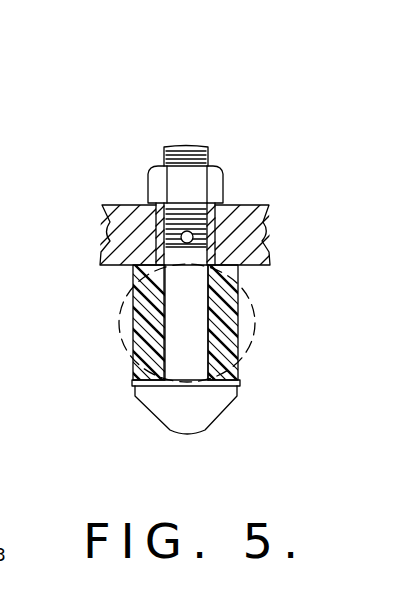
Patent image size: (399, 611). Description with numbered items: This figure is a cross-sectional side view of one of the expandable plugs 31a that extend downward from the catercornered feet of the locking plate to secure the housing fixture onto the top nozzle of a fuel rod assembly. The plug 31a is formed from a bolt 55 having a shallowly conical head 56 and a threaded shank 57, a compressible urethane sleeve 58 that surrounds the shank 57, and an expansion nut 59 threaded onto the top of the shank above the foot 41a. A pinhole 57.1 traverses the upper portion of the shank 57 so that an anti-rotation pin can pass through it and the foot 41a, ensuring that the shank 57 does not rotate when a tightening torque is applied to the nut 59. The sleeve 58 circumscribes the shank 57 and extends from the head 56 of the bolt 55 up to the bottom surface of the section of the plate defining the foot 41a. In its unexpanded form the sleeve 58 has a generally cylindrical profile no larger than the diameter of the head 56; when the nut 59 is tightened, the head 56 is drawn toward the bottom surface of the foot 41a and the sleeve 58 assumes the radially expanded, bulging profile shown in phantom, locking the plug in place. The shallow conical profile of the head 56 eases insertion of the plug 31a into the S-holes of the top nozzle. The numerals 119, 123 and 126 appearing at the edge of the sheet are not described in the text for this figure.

The expandable plug 31a is at (157, 128).
The expansion nut 59 is at (213, 182).
The pinhole 57.1 is at (222, 197).
The catercornered foot 41a is at (113, 234).
The bolt 55 is at (182, 283).
The threaded shank 57 is at (191, 264).
The compressible urethane sleeve 58 is at (140, 337).
The conical head 56 is at (200, 406).
The element 119 is at (12, 55).
The element 123 is at (15, 93).
The element 126 is at (15, 163).